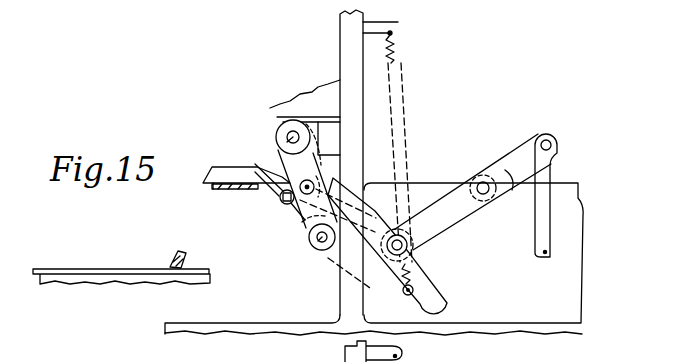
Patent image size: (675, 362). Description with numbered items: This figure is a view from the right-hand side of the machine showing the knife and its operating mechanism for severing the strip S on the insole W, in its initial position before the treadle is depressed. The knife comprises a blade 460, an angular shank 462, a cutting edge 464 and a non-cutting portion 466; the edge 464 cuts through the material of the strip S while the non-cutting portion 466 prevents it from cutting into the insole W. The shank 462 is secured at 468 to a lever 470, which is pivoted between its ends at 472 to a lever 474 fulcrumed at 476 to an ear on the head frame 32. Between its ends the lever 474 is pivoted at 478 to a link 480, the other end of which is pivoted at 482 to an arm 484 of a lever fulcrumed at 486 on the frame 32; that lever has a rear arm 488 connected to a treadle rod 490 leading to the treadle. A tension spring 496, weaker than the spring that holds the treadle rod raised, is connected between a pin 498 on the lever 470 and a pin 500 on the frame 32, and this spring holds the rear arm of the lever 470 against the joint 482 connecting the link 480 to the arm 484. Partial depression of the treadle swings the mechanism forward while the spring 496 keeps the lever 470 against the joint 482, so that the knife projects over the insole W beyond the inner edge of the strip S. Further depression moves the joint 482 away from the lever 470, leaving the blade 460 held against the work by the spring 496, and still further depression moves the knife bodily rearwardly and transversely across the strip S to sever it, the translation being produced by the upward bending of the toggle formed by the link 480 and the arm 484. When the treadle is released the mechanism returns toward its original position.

The head frame 32 is at (350, 58).
The blade 460 is at (238, 170).
The angular shank 462 is at (248, 202).
The cutting edge 464 is at (150, 268).
The non-cutting portion 466 is at (213, 185).
The securing point 468 is at (303, 191).
The lever 470 is at (335, 258).
The pivot 472 is at (318, 246).
The lever 474 is at (281, 158).
The fulcrum 476 is at (292, 137).
The pivot 478 is at (287, 205).
The link 480 is at (372, 222).
The pivot joint 482 is at (400, 250).
The arm 484 is at (437, 228).
The fulcrum 486 is at (484, 182).
The rear arm 488 is at (512, 191).
The treadle rod 490 is at (542, 212).
The tension spring 496 is at (398, 61).
The pin 498 is at (410, 295).
The pin 500 is at (392, 30).
The strip S is at (188, 248).
The insole W is at (78, 269).